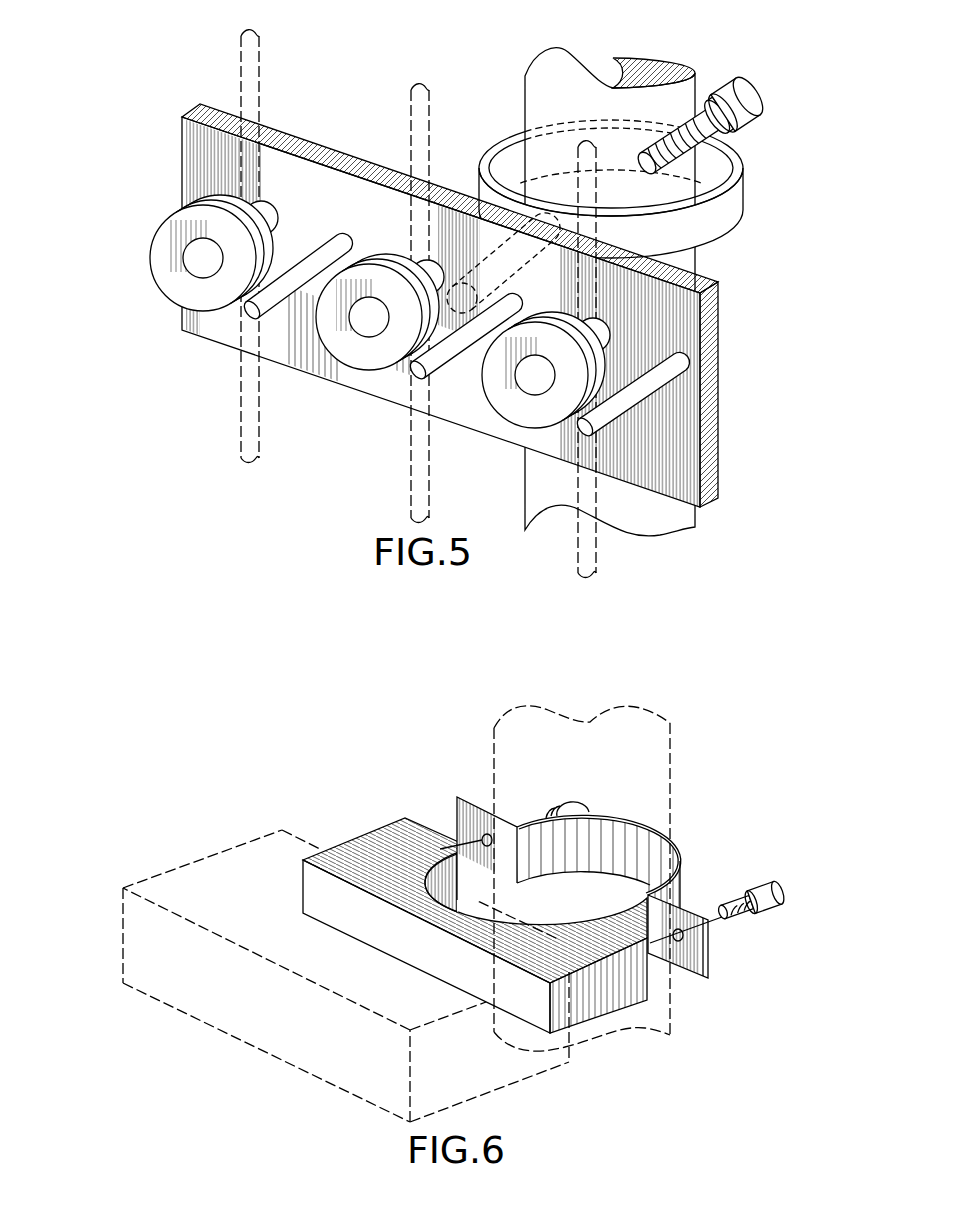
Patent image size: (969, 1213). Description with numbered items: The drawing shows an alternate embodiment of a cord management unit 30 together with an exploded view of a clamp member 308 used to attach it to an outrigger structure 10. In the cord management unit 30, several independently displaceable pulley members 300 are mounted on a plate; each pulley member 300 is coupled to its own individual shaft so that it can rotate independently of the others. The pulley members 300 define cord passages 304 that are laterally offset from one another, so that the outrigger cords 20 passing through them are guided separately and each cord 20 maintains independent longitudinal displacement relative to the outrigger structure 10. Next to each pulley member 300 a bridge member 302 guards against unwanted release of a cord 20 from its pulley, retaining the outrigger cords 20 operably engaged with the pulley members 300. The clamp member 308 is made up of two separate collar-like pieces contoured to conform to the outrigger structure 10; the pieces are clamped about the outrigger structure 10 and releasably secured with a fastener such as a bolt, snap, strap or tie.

In FIG. 6, the outrigger structure 10 is at (671, 790).
In FIG. 5, the outrigger cords 20 is at (237, 63).
In FIG. 5, the cord management unit 30 is at (735, 323).
In FIG. 5, the pulley members 300 is at (510, 393).
In FIG. 5, the bridge member 302 is at (633, 396).
In FIG. 5, the cord passages 304 is at (218, 183).
In FIG. 6, the clamp member 308 is at (729, 941).